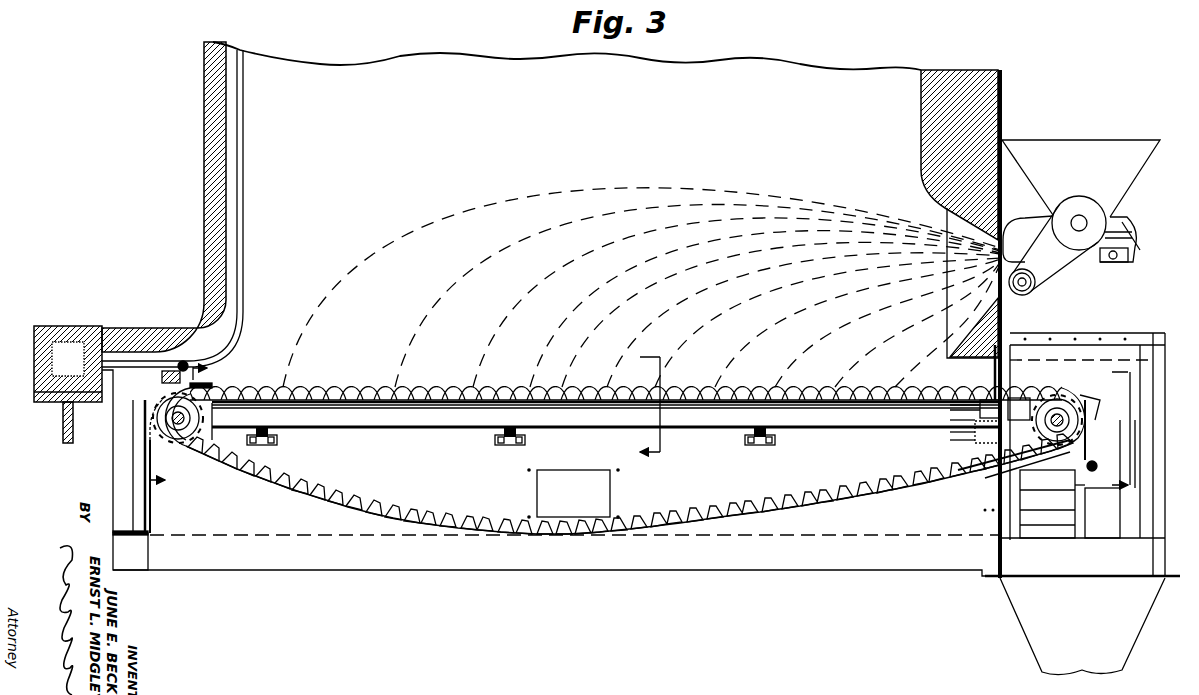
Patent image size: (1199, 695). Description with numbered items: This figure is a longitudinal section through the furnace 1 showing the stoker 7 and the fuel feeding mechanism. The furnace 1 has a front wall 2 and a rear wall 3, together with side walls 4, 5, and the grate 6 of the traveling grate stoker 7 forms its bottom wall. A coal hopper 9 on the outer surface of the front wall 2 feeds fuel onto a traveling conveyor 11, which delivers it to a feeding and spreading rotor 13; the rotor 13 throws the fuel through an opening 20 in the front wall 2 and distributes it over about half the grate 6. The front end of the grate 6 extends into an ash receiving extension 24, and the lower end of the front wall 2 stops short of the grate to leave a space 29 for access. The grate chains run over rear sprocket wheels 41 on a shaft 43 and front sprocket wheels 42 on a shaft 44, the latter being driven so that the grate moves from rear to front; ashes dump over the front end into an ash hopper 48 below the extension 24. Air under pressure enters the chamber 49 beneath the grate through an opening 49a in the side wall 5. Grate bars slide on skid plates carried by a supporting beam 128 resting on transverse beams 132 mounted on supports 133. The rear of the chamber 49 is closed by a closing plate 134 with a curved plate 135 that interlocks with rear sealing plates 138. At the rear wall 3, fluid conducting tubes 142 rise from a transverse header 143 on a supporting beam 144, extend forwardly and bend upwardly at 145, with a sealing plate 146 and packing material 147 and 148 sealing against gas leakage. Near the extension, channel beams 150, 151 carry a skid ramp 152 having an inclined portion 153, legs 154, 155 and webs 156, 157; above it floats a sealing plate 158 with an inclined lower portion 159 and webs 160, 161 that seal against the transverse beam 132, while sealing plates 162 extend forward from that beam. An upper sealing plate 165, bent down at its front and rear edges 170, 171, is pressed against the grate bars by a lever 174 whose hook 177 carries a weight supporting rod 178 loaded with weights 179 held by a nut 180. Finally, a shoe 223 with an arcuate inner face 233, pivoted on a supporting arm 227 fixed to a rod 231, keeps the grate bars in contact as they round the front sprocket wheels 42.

The furnace 1 is at (590, 113).
The front wall 2 is at (992, 113).
The rear wall 3 is at (229, 131).
The side wall 4 is at (640, 404).
The side wall 5 is at (433, 64).
The grate 6 is at (474, 388).
The stoker 7 is at (716, 367).
The coal hopper 9 is at (1128, 179).
The traveling conveyor 11 is at (1133, 264).
The feeding and spreading rotor 13 is at (1040, 298).
The opening 20 is at (960, 262).
The ash receiving extension 24 is at (1082, 442).
The space 29 is at (954, 366).
The rear sprocket wheel 41 is at (206, 442).
The front sprocket wheel 42 is at (1058, 410).
The shaft 43 is at (170, 448).
The shaft 44 is at (1066, 406).
The ash hopper 48 is at (1013, 606).
The chamber 49 is at (575, 510).
The opening 49a is at (610, 494).
The supporting beam 128 is at (402, 428).
The transverse beam 132 is at (270, 446).
The support 133 is at (280, 437).
The closing plate 134 is at (148, 519).
The curved plate 135 is at (148, 408).
The rear sealing plate 138 is at (214, 388).
The fluid conducting tube 142 is at (242, 197).
The transverse header 143 is at (63, 340).
The supporting beam 144 is at (63, 432).
The forwardly extending portion of tubes 145 is at (237, 346).
The sealing plate 146 is at (190, 368).
The heat resistive packing material 147 is at (162, 378).
The heat resistive packing material 148 is at (204, 183).
The channel beam 150 is at (1018, 522).
The channel beam 151 is at (1088, 516).
The skid ramp 152 is at (986, 505).
The upper flat inclined portion 153 is at (1047, 501).
The supporting leg 154 is at (1047, 503).
The supporting leg 155 is at (1047, 518).
The transverse web 156 is at (1047, 487).
The transverse web 157 is at (1093, 484).
The sealing plate 158 is at (1009, 455).
The inclined lower portion 159 is at (1027, 467).
The web 160 is at (950, 462).
The web 161 is at (1002, 422).
The sealing plate 162 is at (989, 381).
The upper sealing plate 165 is at (948, 406).
The downwardly bent front edge 170 is at (940, 392).
The downwardly bent rear edge 171 is at (1040, 400).
The lever 174 is at (954, 417).
The notch or hook 177 is at (972, 396).
The weight supporting rod 178 is at (948, 432).
The weight 179 is at (952, 442).
The nut 180 is at (940, 452).
The shoe 223 is at (1102, 403).
The supporting arm 227 is at (1122, 454).
The rod 231 is at (1098, 467).
The inner face 233 is at (1085, 425).